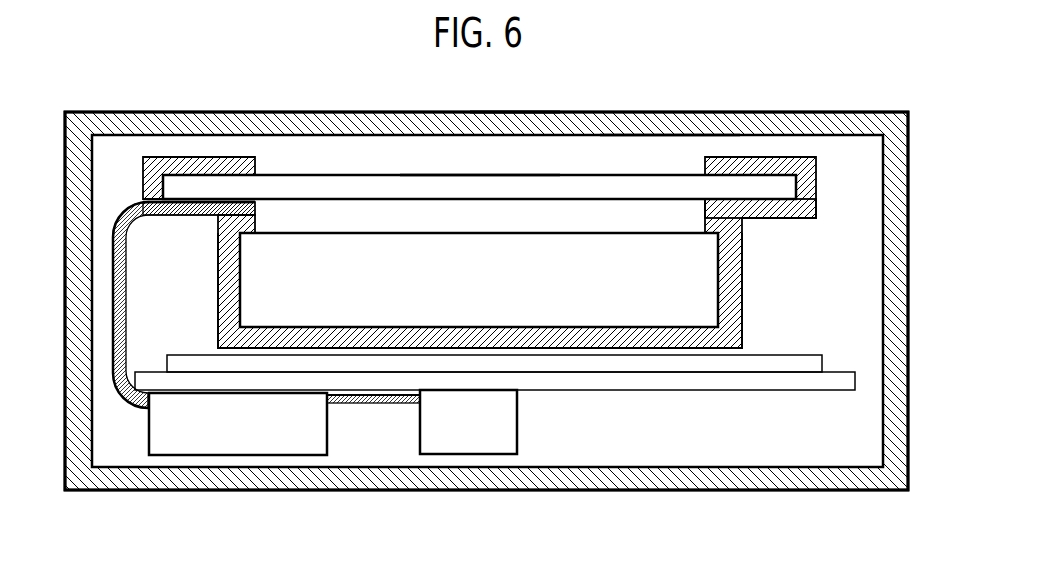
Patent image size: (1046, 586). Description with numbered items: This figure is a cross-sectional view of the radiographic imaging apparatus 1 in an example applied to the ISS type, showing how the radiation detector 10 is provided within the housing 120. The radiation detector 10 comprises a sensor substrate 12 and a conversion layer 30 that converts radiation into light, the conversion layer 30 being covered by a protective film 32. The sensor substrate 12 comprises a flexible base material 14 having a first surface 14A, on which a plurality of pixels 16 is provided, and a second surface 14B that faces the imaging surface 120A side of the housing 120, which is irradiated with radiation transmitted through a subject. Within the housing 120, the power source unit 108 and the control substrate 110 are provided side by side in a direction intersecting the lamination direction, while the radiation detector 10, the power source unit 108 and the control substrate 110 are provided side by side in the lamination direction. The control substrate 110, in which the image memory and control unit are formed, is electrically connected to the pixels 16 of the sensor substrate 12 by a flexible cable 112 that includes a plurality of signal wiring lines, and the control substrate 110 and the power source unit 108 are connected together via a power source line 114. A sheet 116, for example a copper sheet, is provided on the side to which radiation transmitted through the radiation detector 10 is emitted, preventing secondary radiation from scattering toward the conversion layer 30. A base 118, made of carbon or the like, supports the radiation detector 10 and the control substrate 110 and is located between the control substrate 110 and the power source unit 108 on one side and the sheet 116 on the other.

The radiographic imaging apparatus 1 is at (926, 542).
The radiation detector 10 is at (665, 153).
The sensor substrate 12 is at (843, 167).
The base material 14 is at (783, 186).
The first surface 14A is at (211, 200).
The second surface 14B is at (458, 175).
The pixels 16 is at (688, 220).
The conversion layer 30 is at (703, 282).
The protective film 32 is at (730, 323).
The power source unit 108 is at (468, 430).
The control substrate 110 is at (250, 410).
The flexible cable 112 is at (120, 312).
The power source line 114 is at (383, 405).
The sheet 116 is at (620, 362).
The base 118 is at (742, 377).
The housing 120 is at (390, 112).
The imaging surface 120A is at (512, 110).